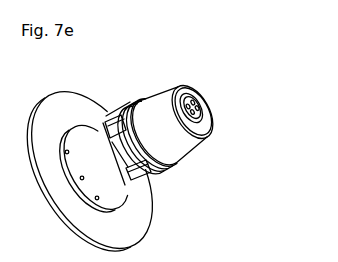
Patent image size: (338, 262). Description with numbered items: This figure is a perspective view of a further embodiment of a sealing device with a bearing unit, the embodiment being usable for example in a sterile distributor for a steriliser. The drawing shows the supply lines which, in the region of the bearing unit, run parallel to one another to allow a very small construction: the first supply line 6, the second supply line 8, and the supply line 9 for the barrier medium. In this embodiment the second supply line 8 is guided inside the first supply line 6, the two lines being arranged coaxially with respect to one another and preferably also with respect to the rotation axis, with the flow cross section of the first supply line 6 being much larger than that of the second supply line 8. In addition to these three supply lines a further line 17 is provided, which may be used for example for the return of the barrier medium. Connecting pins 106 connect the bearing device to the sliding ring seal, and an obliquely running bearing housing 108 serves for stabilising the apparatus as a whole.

The first supply line 6 is at (212, 112).
The second supply line 8 is at (201, 91).
The supply line for the barrier medium 9 is at (180, 87).
The further line 17 is at (210, 101).
The connecting pins 106 is at (112, 118).
The bearing housing 108 is at (195, 150).